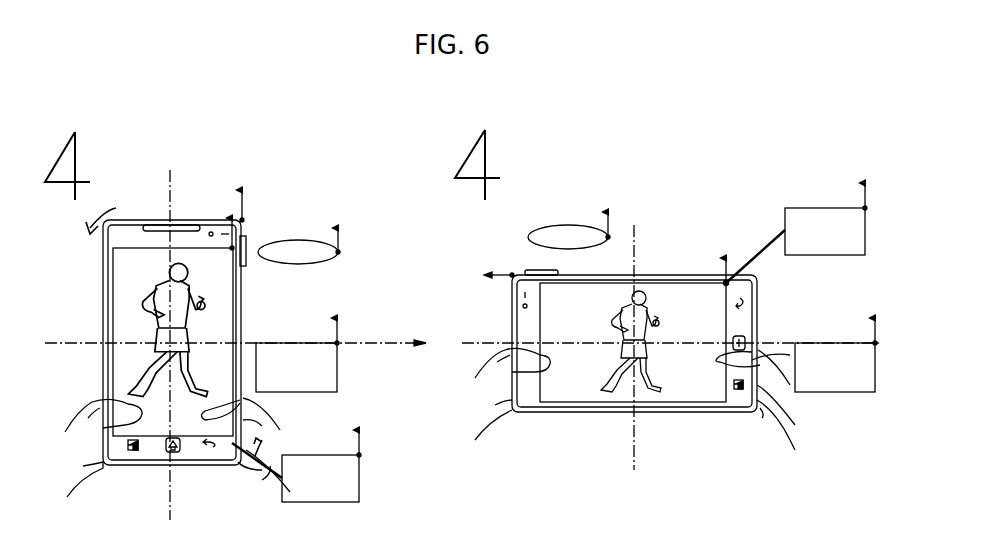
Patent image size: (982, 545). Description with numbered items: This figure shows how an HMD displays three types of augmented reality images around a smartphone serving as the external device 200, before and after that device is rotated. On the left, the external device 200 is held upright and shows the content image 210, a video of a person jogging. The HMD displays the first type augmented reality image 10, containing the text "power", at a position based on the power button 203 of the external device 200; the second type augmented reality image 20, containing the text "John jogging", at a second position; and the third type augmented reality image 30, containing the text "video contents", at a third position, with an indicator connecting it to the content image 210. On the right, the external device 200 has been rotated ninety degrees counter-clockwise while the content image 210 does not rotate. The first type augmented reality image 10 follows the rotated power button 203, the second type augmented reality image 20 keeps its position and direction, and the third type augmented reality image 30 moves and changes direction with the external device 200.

The first type augmented reality image 10 is at (296, 240).
The second type augmented reality image 20 is at (311, 343).
The third type augmented reality image 30 is at (337, 456).
The external device 200 is at (130, 222).
The power button 203 is at (242, 258).
The content image 210 is at (152, 292).